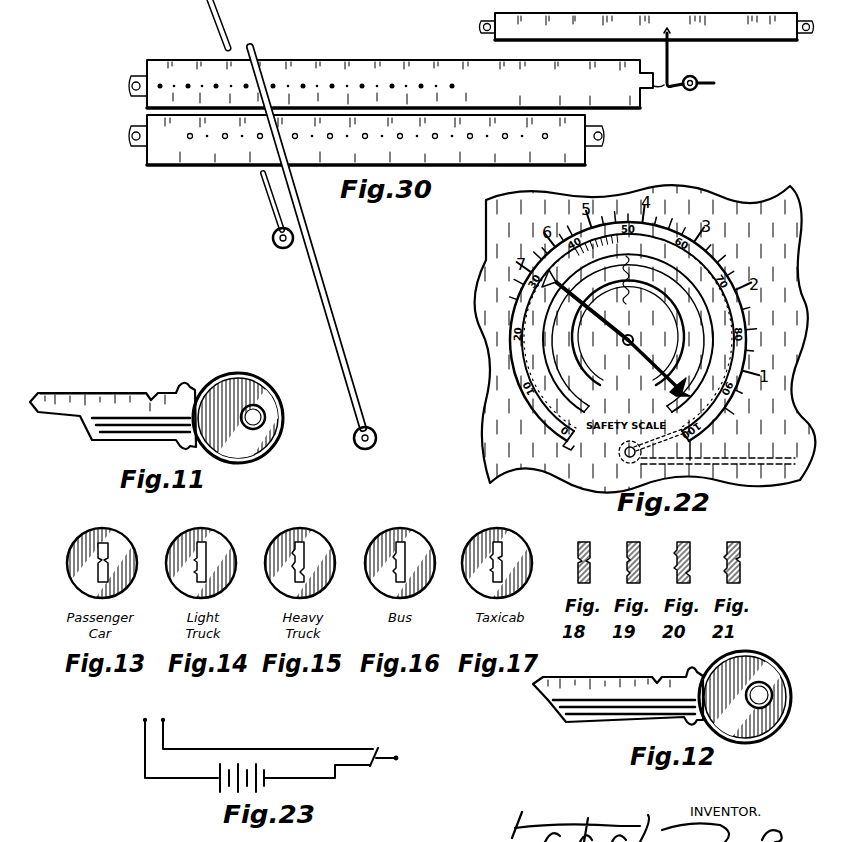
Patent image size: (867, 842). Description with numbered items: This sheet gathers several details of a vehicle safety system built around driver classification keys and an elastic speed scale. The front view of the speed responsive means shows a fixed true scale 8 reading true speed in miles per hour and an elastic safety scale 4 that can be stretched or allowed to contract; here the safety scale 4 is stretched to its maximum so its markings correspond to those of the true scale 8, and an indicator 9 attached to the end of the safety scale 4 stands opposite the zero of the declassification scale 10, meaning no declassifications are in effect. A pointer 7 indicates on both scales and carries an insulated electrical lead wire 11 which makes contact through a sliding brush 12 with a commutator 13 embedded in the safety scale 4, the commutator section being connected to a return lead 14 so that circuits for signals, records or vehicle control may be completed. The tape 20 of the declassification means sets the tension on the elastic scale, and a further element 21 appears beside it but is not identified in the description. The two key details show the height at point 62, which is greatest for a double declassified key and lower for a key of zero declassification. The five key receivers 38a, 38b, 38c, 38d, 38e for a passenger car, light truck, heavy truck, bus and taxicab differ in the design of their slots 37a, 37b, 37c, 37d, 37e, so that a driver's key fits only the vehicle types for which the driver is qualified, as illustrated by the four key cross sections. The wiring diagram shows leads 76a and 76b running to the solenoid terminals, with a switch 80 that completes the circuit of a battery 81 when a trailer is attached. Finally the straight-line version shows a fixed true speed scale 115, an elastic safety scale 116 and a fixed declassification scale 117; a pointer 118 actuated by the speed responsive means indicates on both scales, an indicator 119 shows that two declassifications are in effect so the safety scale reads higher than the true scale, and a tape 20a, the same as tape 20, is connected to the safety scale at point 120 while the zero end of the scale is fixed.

In FIG. 30, the fixed true speed scale 115 is at (468, 165).
In FIG. 30, the elastic safety scale 116 is at (620, 112).
In FIG. 30, the fixed declassification scale 117 is at (724, 40).
In FIG. 30, the pointer 118 is at (228, 10).
In FIG. 30, the indicator 119 is at (670, 58).
In FIG. 30, the connection point 120 is at (689, 92).
In FIG. 30, the tape 20a is at (714, 90).
In FIG. 22, the declassification scale 10 is at (510, 273).
In FIG. 22, the electrical lead wire 11 is at (616, 328).
In FIG. 22, the sliding brush 12 is at (558, 290).
In FIG. 22, the commutator 13 is at (598, 261).
In FIG. 22, the return lead 14 is at (638, 270).
In FIG. 22, the pointer 7 is at (638, 356).
In FIG. 22, the true scale 8 is at (603, 384).
In FIG. 22, the indicator 9 is at (705, 440).
In FIG. 22, the safety scale 4 is at (572, 438).
In FIG. 22, the tape 20 is at (786, 460).
In FIG. 22, the adjusting knob 21 is at (620, 460).
In FIG. 11, the key height point 62 is at (76, 422).
In FIG. 12, the key height point 62 is at (618, 676).
In FIG. 13, the passenger car key slot 37a is at (112, 540).
In FIG. 13, the passenger car key receiver 38a is at (60, 542).
In FIG. 14, the light truck key slot 37b is at (207, 540).
In FIG. 14, the light truck key receiver 38b is at (168, 586).
In FIG. 15, the heavy truck key slot 37c is at (305, 540).
In FIG. 15, the heavy truck key receiver 38c is at (270, 590).
In FIG. 16, the bus key slot 37d is at (406, 540).
In FIG. 16, the bus key receiver 38d is at (370, 588).
In FIG. 17, the taxicab key slot 37e is at (503, 540).
In FIG. 17, the taxicab key receiver 38e is at (465, 587).
In FIG. 23, the solenoid lead 76a is at (142, 721).
In FIG. 23, the solenoid lead 76b is at (163, 722).
In FIG. 23, the switch 80 is at (376, 768).
In FIG. 23, the battery 81 is at (218, 786).